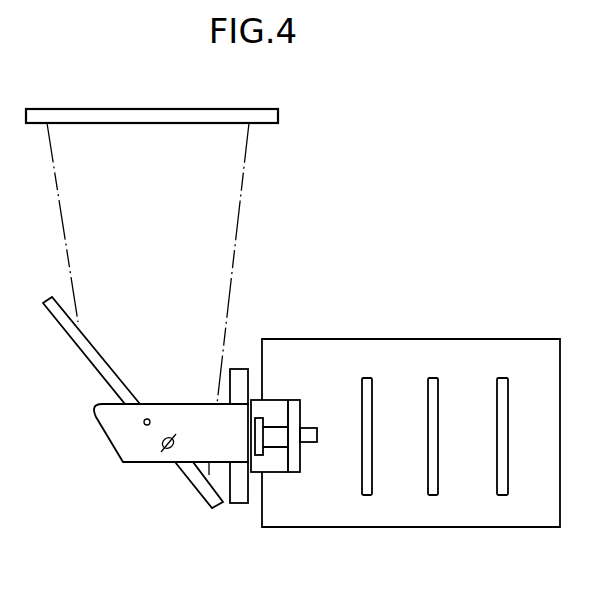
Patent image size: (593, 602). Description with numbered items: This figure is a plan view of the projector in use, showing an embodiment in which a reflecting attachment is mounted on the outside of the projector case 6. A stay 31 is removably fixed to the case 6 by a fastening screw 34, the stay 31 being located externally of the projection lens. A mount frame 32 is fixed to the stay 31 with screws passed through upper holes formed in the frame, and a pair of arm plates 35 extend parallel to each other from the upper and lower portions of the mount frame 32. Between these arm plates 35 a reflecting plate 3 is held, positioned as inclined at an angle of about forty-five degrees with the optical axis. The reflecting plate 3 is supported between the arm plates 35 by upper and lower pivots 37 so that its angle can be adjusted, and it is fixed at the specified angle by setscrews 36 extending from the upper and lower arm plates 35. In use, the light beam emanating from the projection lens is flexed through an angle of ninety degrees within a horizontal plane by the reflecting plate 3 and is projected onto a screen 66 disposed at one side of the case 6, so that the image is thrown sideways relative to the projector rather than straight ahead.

The screen 66 is at (142, 117).
The reflecting plate 3 is at (92, 360).
The arm plates 35 is at (132, 437).
The pivots 37 is at (148, 418).
The setscrews 36 is at (162, 447).
The mount frame 32 is at (232, 368).
The stay 31 is at (277, 465).
The fastening screw 34 is at (273, 435).
The case 6 is at (530, 338).